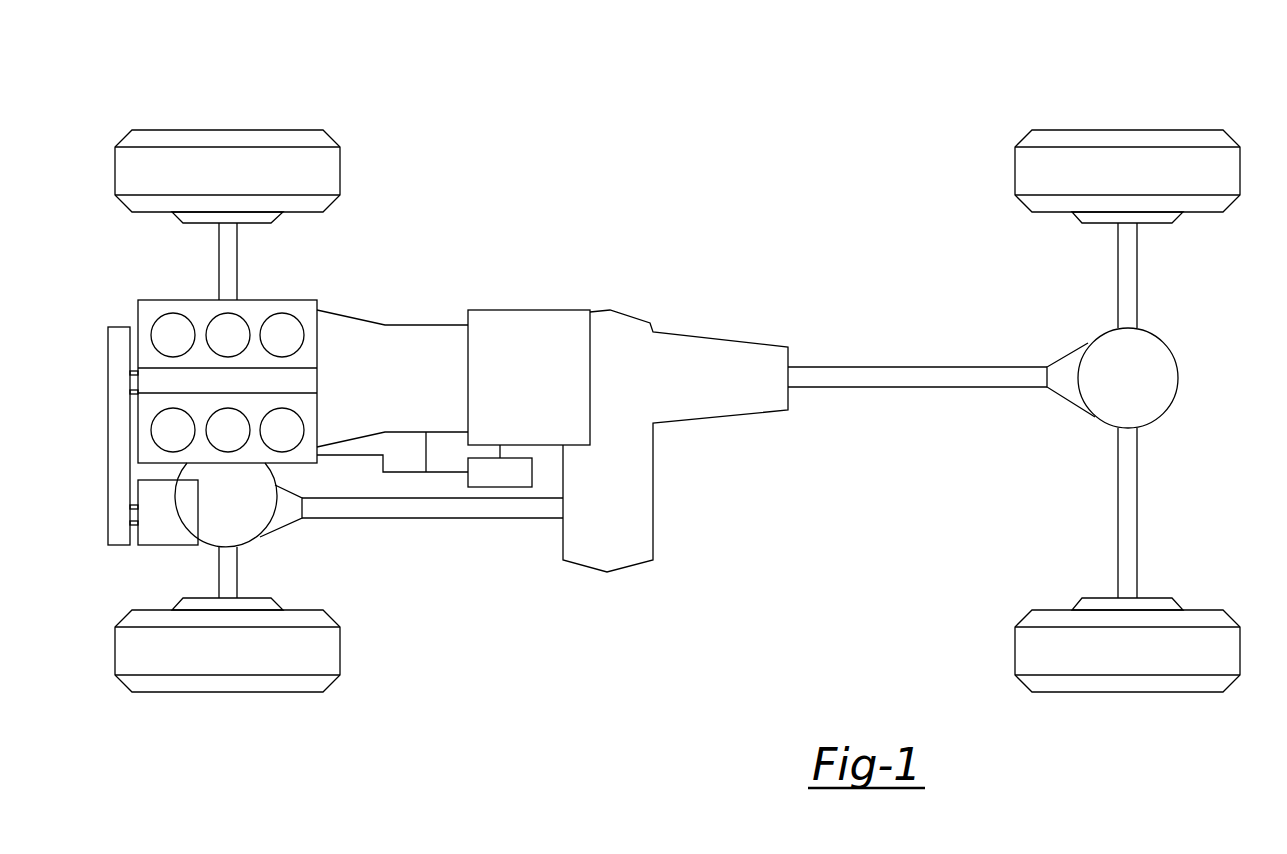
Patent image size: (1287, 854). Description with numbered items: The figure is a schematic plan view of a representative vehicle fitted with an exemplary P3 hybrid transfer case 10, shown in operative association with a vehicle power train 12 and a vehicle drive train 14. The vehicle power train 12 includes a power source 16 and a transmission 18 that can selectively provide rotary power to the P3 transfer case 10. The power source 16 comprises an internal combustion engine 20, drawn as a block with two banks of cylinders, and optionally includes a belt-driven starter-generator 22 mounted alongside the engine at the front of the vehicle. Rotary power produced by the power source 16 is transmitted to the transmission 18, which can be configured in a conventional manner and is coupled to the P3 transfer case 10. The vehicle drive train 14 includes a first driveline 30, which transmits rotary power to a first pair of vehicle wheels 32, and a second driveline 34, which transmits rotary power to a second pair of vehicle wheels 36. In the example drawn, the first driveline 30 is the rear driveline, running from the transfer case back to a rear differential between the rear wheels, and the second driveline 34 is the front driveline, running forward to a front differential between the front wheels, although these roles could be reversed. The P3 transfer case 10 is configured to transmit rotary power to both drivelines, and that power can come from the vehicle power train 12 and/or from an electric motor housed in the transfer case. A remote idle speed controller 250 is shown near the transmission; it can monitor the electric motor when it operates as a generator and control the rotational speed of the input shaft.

The P3 transfer case 10 is at (697, 320).
The vehicle power train 12 is at (349, 347).
The vehicle drive train 14 is at (676, 527).
The power source 16 is at (232, 355).
The transmission 18 is at (453, 375).
The internal combustion engine 20 is at (168, 298).
The belt-driven starter-generator 22 is at (164, 533).
The first driveline 30 is at (818, 417).
The first pair of vehicle wheels 32 is at (1160, 130).
The second driveline 34 is at (455, 530).
The second pair of vehicle wheels 36 is at (202, 130).
The remote idle speed controller 250 is at (497, 473).